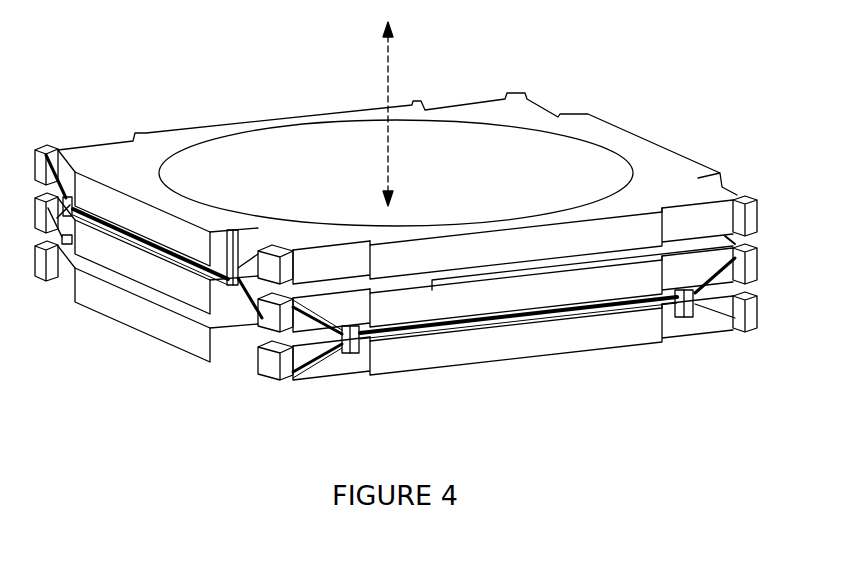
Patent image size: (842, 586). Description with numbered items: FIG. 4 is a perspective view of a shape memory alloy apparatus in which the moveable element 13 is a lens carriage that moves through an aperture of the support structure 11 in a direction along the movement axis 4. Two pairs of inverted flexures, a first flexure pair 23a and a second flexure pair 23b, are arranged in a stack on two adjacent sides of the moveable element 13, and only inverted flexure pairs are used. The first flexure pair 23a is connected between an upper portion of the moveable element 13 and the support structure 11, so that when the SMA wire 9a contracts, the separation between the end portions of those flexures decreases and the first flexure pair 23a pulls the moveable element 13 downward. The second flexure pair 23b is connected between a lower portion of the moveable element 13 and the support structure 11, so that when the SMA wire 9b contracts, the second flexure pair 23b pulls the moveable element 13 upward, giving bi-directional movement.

The movement axis 4 is at (390, 63).
The moveable element 13 is at (670, 167).
The support structure 11 is at (642, 278).
The SMA wire 9a is at (133, 233).
The SMA wire 9b is at (525, 313).
The first flexure pair 23a is at (68, 247).
The second flexure pair 23b is at (352, 355).